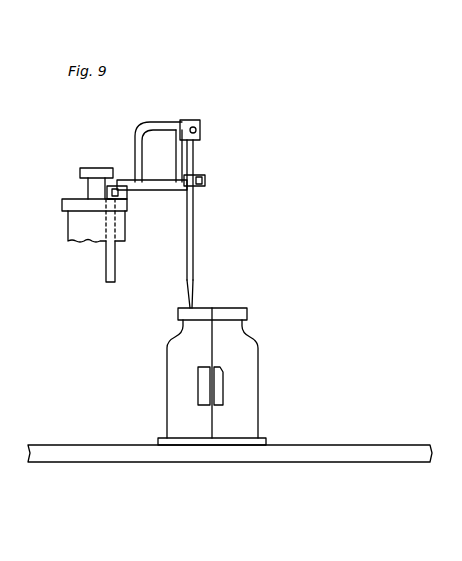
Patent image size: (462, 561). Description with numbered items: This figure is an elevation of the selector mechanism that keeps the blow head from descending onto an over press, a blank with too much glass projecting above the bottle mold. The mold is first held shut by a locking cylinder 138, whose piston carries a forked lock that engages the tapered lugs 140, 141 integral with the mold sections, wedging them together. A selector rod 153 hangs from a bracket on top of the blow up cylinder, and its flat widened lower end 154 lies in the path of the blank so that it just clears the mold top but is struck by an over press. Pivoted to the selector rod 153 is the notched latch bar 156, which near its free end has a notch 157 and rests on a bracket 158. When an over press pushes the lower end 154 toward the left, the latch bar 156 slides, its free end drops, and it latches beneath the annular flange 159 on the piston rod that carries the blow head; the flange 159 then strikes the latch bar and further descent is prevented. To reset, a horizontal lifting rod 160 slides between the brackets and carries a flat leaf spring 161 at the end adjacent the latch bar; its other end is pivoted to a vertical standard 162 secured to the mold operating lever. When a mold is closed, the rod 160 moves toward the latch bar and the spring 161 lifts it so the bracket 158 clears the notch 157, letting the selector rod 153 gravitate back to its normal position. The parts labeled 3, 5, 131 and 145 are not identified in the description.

The base board 3 is at (112, 462).
The bottle 5 is at (248, 354).
The stem 131 is at (86, 184).
The locking cylinder 138 is at (66, 232).
The lug 140 is at (200, 387).
The lug 141 is at (222, 390).
The hook arm 145 is at (180, 124).
The selector rod 153 is at (192, 228).
The flat widened lower end 154 is at (188, 300).
The notched latch bar 156 is at (186, 178).
The notch 157 is at (139, 185).
The bracket 158 is at (113, 201).
The annular flange 159 is at (92, 167).
The horizontal lifting rod 160 is at (130, 192).
The flat leaf spring 161 is at (143, 175).
The vertical standard 162 is at (104, 268).